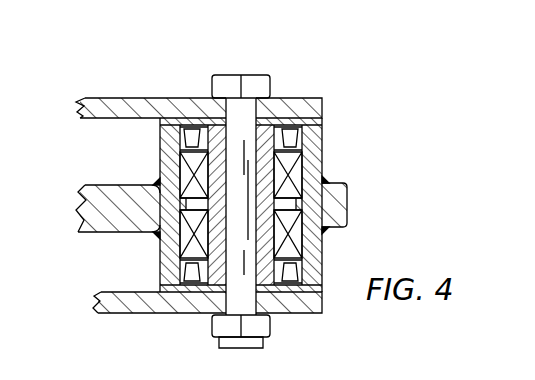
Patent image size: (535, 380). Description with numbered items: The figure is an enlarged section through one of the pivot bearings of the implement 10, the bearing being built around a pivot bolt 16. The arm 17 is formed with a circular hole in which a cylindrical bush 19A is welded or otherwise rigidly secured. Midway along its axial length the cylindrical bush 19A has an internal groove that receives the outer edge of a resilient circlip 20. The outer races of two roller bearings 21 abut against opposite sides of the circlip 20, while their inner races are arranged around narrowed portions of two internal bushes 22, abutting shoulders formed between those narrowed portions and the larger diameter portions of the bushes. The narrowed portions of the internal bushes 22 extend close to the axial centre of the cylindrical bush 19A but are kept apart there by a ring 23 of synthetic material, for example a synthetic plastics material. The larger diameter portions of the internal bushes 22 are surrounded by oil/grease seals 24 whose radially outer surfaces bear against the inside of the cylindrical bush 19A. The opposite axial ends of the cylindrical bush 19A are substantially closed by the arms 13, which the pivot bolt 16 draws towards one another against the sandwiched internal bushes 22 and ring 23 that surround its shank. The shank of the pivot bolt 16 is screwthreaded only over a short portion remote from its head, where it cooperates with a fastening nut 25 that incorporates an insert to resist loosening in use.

The guide roller assembly 10 is at (67, 245).
The arms 13 is at (98, 98).
The pivot bolt 16 is at (230, 74).
The arm 17 is at (83, 188).
The cylindrical bush 19A is at (160, 162).
The resilient circlip 20 is at (147, 232).
The roller bearings 21 is at (300, 256).
The internal bushes 22 is at (265, 125).
The ring 23 is at (270, 193).
The oil/grease seals 24 is at (183, 132).
The fastening nut 25 is at (218, 327).